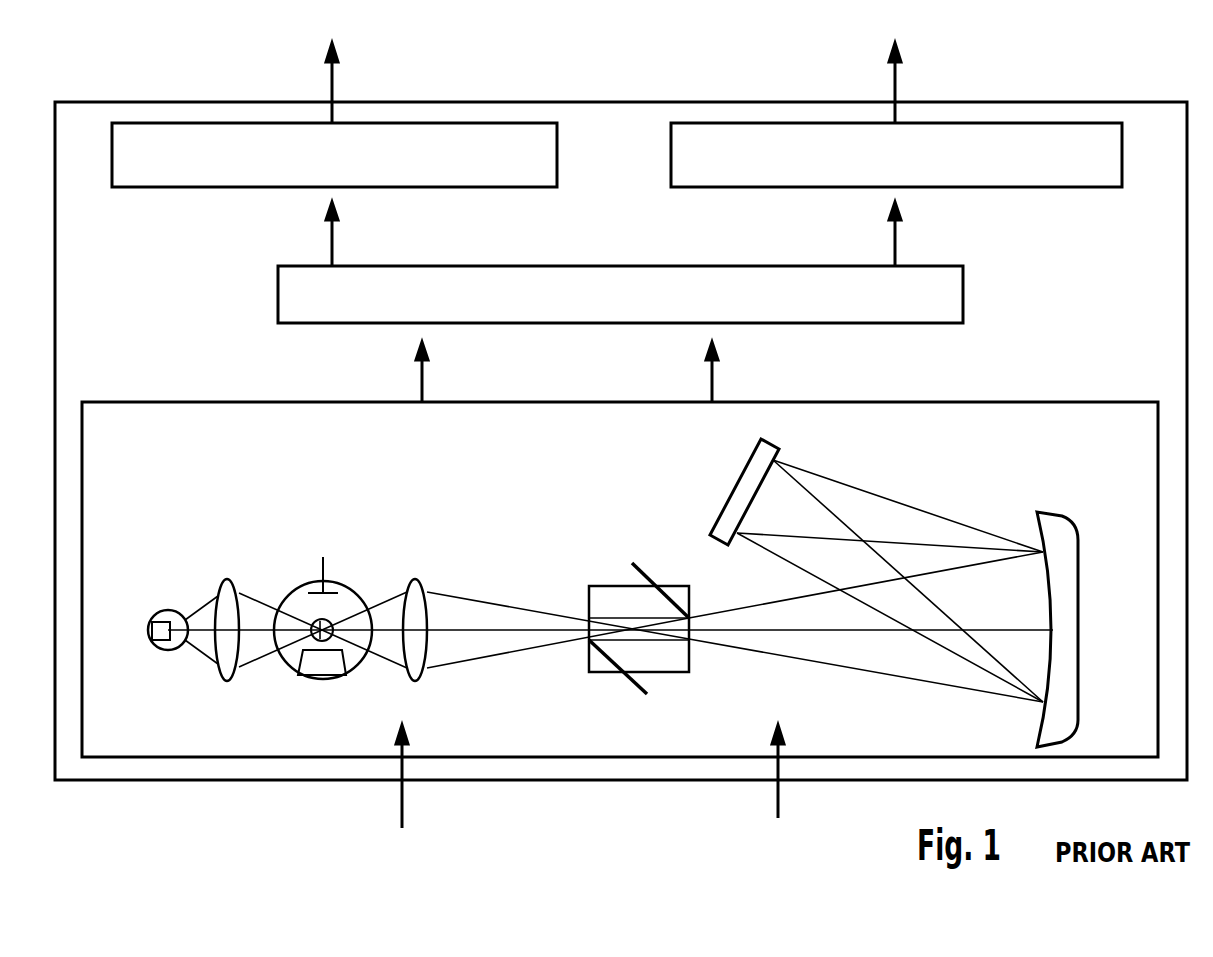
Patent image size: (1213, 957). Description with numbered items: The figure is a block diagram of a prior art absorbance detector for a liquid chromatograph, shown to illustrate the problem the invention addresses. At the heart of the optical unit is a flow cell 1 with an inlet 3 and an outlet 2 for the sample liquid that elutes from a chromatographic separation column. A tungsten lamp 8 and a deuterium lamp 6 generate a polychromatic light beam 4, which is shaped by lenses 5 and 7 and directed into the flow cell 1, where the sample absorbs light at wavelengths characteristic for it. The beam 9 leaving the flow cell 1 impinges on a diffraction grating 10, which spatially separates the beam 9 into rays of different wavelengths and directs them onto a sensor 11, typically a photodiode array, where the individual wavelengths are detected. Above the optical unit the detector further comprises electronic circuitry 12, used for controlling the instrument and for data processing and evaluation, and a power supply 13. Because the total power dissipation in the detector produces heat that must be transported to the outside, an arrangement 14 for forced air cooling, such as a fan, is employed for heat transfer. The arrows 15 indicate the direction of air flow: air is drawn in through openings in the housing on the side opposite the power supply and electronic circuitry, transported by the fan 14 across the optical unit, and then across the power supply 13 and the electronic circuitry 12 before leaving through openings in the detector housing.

The flow cell 1 is at (677, 677).
The outlet 2 is at (635, 565).
The inlet 3 is at (633, 688).
The polychromatic light beam 4 is at (458, 607).
The lens 5 is at (415, 678).
The deuterium lamp 6 is at (320, 680).
The lens 7 is at (227, 678).
The tungsten lamp 8 is at (162, 650).
The beam 9 is at (872, 660).
The diffraction grating 10 is at (1060, 527).
The sensor 11 is at (768, 442).
The electronic circuitry 12 is at (1055, 170).
The power supply 13 is at (183, 175).
The arrangement for forced air cooling 14 is at (950, 302).
The arrows 15 is at (332, 90).